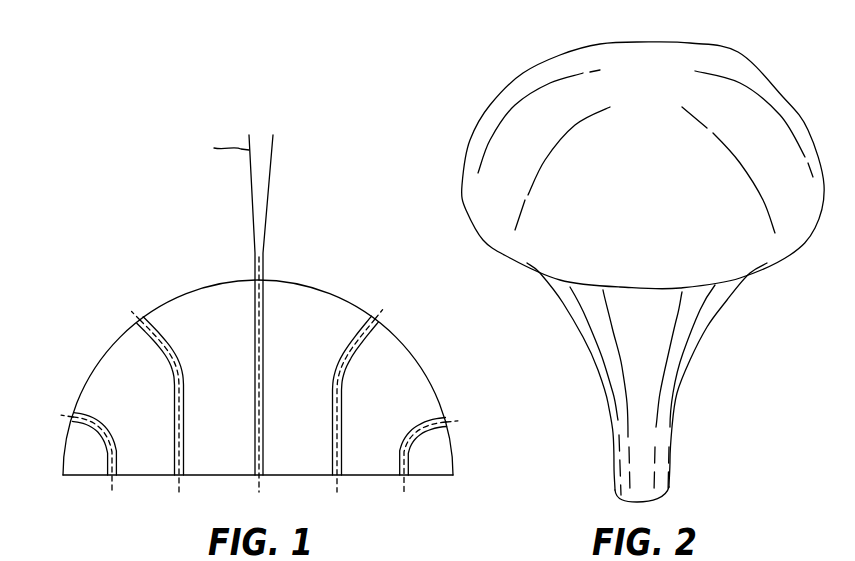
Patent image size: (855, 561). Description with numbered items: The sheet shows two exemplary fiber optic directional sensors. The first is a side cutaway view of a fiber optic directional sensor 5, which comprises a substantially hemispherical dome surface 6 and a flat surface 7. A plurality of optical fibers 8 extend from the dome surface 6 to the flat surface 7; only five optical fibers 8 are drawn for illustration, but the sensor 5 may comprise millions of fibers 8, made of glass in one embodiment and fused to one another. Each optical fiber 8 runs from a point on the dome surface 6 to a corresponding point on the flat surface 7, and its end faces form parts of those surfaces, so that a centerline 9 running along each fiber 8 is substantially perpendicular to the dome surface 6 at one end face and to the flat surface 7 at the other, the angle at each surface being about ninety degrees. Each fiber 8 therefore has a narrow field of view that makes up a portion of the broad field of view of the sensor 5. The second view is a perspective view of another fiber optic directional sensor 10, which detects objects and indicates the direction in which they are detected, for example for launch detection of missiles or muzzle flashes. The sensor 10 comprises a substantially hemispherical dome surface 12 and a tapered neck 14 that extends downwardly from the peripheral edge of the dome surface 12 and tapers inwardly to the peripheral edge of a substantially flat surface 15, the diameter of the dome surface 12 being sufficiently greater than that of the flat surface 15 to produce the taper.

In FIG. 1, the fiber optic directional sensor 5 is at (108, 254).
In FIG. 1, the dome surface 6 is at (218, 283).
In FIG. 1, the flat surface 7 is at (237, 477).
In FIG. 1, the optical fiber 8 is at (160, 350).
In FIG. 1, the centerline 9 is at (137, 308).
In FIG. 2, the fiber optic directional sensor 10 is at (467, 84).
In FIG. 2, the dome surface 12 is at (650, 42).
In FIG. 2, the tapered neck 14 is at (703, 327).
In FIG. 2, the flat surface 15 is at (645, 504).